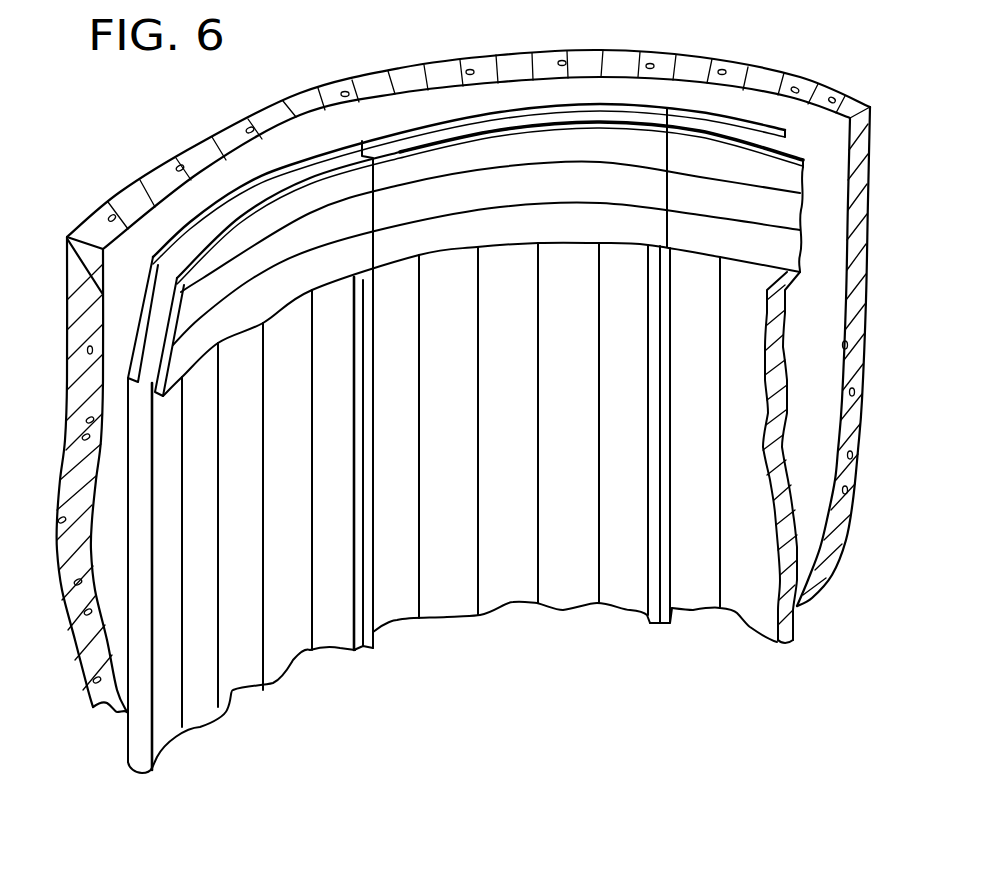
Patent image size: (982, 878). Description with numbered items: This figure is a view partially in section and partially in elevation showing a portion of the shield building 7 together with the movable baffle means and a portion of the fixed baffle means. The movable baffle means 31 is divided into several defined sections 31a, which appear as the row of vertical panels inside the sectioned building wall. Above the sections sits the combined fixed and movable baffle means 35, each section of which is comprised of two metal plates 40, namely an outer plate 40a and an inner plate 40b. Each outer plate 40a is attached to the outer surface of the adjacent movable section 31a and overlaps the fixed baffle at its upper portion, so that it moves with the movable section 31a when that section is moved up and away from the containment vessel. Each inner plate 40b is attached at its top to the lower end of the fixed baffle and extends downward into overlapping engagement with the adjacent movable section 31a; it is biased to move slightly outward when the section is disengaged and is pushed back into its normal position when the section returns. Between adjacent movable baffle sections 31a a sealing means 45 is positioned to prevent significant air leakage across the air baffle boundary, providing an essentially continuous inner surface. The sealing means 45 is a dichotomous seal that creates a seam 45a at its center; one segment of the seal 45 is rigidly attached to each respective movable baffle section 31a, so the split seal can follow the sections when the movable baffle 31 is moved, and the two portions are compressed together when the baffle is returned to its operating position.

The outer casing wall 7 is at (163, 157).
The movable baffle 31 is at (247, 670).
The movable baffle section 31a is at (230, 697).
The combined fixed and movable baffle means 35 is at (750, 133).
The metal plates 40 is at (660, 623).
The outer plate 40a is at (147, 282).
The inner plate 40b is at (157, 330).
The sealing means 45 is at (357, 653).
The seam 45a is at (367, 618).